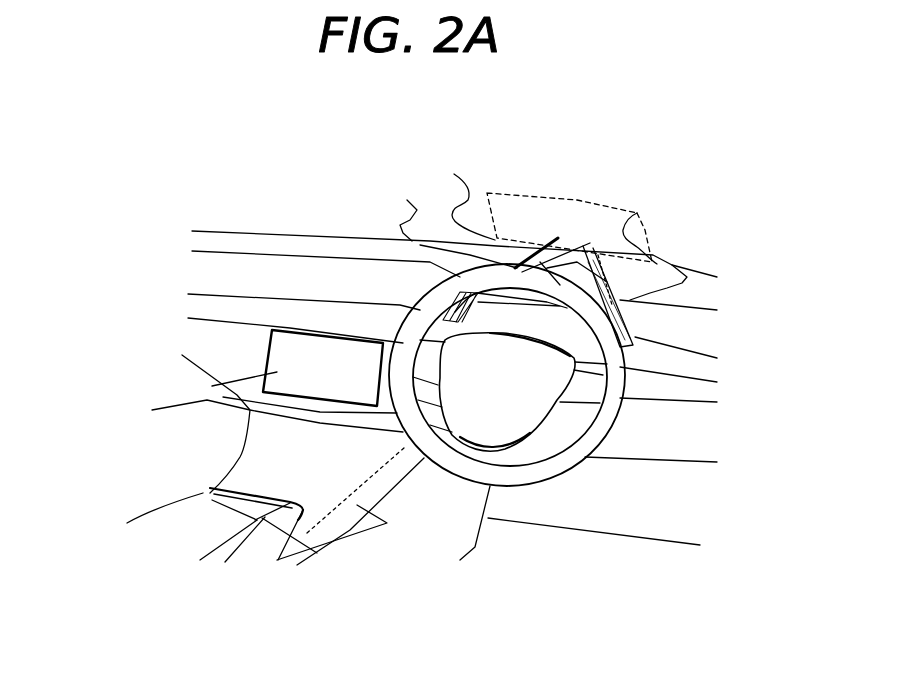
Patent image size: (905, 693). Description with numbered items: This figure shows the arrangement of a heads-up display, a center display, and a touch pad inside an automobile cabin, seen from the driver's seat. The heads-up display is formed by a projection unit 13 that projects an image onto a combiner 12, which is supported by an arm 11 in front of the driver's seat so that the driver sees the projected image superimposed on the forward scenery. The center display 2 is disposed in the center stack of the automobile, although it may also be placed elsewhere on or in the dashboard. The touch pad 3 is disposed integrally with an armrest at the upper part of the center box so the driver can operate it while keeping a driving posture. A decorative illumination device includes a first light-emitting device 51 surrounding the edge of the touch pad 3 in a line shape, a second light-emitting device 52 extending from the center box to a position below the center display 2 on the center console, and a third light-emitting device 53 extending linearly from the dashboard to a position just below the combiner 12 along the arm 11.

The center display 2 is at (223, 397).
The touch pad 3 is at (208, 495).
The arm 11 is at (407, 200).
The combiner 12 is at (587, 203).
The projection unit 13 is at (641, 220).
The first light-emitting device 51 is at (316, 562).
The second light-emitting device 52 is at (385, 523).
The third light-emitting device 53 is at (454, 174).